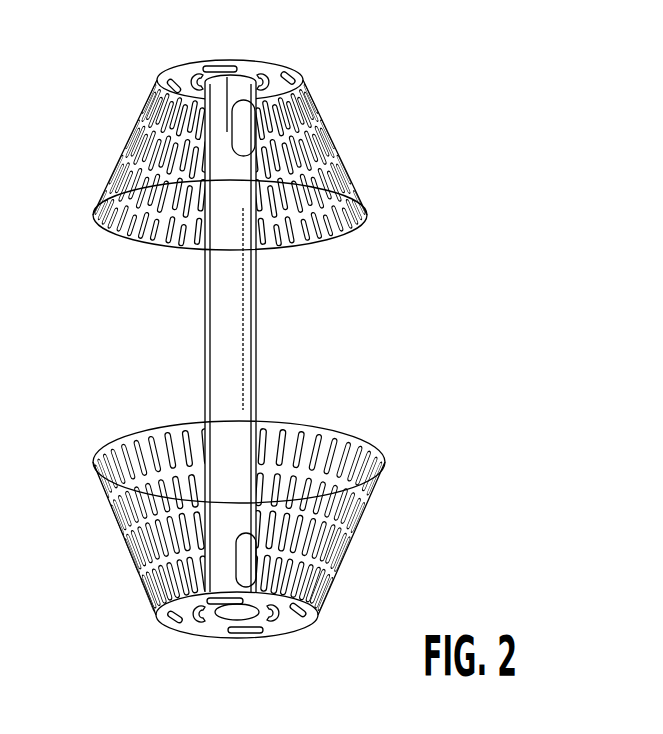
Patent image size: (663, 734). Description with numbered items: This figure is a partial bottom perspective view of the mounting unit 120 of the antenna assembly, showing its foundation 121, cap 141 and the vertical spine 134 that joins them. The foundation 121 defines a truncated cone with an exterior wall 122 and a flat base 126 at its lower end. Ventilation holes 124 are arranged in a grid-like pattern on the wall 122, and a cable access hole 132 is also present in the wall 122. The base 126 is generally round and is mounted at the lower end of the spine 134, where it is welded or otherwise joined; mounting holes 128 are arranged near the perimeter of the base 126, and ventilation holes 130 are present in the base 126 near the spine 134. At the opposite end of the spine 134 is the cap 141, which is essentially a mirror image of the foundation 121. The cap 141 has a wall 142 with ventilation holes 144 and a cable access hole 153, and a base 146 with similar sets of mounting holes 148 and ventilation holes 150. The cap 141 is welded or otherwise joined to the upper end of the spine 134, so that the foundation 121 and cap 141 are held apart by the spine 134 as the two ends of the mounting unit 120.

The mounting unit 120 is at (468, 348).
The foundation 121 is at (246, 530).
The exterior wall 122 is at (312, 446).
The ventilation holes 124 is at (278, 433).
The base 126 is at (197, 637).
The mounting holes 128 is at (305, 617).
The ventilation holes 130 is at (240, 628).
The cable access hole 132 is at (247, 545).
The vertical spine 134 is at (307, 327).
The cap 141 is at (280, 138).
The wall 142 is at (357, 216).
The ventilation holes 144 is at (326, 135).
The base 146 is at (254, 60).
The mounting holes 148 is at (290, 80).
The ventilation holes 150 is at (197, 78).
The cable access hole 153 is at (247, 118).